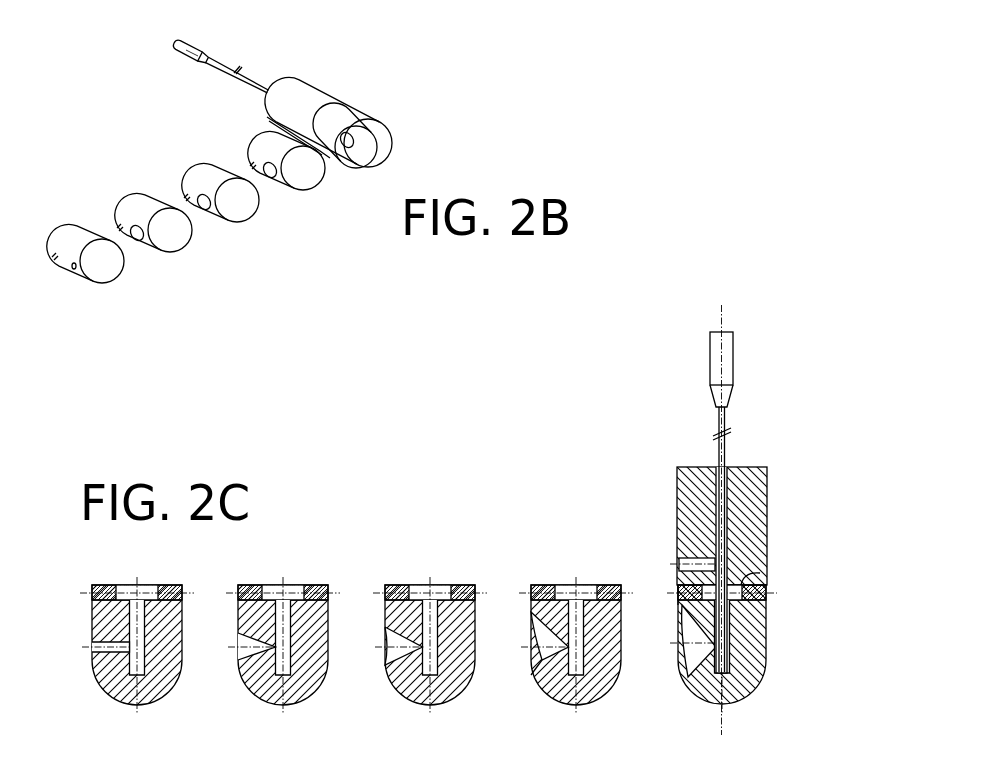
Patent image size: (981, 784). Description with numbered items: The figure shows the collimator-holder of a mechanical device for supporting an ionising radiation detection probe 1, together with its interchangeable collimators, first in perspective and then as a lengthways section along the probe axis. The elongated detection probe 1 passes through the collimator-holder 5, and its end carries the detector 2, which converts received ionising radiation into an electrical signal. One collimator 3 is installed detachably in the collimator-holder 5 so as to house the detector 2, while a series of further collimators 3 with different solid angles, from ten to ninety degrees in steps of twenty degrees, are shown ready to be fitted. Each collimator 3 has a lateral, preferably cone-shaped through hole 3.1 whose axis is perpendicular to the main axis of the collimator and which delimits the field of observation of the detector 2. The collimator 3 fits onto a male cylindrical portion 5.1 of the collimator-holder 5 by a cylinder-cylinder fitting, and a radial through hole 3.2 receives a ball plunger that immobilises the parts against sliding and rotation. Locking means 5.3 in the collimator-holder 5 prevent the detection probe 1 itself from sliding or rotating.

In FIG. 2B, the ionising radiation detection probe 1 is at (237, 67).
In FIG. 2C, the ionising radiation detection probe 1 is at (710, 357).
In FIG. 2B, the detector 2 is at (342, 117).
In FIG. 2C, the detector 2 is at (726, 645).
In FIG. 2B, the collimator 3 is at (207, 202).
In FIG. 2C, the collimator 3 is at (383, 663).
In FIG. 2B, the through hole 3.1 is at (250, 157).
In FIG. 2C, the through hole 3.1 is at (517, 662).
In FIG. 2C, the radial through hole 3.2 is at (748, 605).
In FIG. 2B, the collimator-holder 5 is at (286, 98).
In FIG. 2C, the collimator-holder 5 is at (714, 517).
In FIG. 2C, the male cylindrical portion 5.1 is at (740, 574).
In FIG. 2B, the locking means 5.3 is at (266, 117).
In FIG. 2C, the locking means 5.3 is at (677, 542).